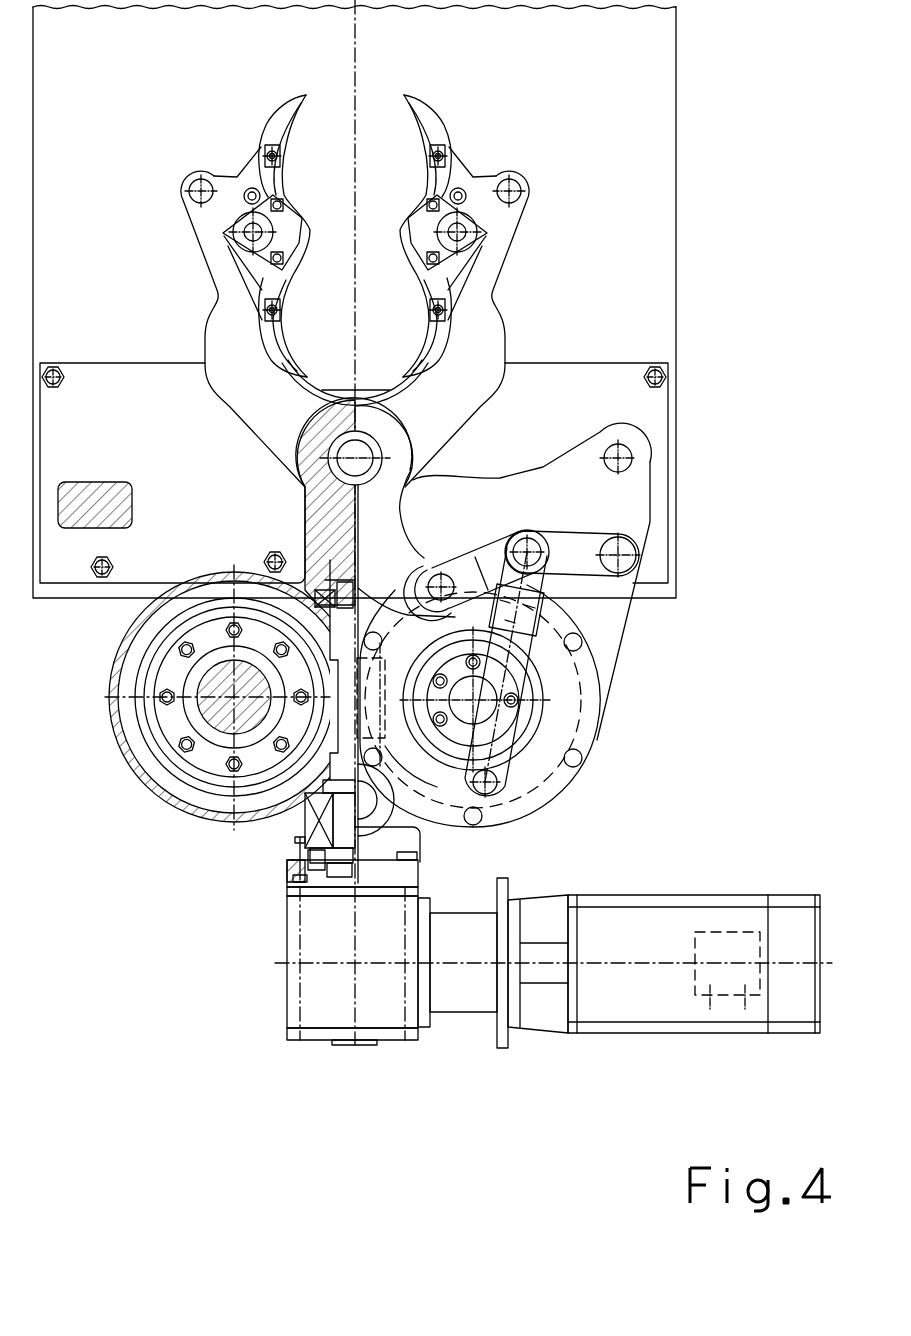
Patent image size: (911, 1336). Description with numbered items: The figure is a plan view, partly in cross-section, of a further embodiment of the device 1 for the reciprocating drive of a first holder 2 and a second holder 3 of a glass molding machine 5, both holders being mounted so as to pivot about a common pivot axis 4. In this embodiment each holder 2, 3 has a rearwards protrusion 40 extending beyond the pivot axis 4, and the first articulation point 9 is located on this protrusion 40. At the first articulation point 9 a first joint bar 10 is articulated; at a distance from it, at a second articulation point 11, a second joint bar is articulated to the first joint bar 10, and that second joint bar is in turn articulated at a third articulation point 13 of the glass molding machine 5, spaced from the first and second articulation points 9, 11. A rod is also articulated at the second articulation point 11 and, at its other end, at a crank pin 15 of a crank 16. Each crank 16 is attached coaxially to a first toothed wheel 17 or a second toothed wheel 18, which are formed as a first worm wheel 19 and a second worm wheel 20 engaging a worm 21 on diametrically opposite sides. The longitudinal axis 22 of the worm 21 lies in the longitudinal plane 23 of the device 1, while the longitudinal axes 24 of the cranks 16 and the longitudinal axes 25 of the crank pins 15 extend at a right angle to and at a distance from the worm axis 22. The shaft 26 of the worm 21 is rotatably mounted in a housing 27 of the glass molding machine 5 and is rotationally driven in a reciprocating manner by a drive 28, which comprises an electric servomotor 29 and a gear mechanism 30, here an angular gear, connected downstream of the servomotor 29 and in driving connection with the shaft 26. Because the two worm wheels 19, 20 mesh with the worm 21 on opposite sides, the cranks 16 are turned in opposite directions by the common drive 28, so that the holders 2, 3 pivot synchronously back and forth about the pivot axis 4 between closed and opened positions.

The device 1 is at (178, 952).
The first holder 2 is at (217, 288).
The second holder 3 is at (502, 310).
The pivot axis 4 is at (380, 440).
The glass molding machine 5 is at (676, 115).
The first articulation point 9 is at (449, 562).
The first joint bar 10 is at (487, 542).
The second articulation point 11 is at (527, 537).
The third articulation point 13 is at (645, 522).
The crank pin 15 is at (497, 787).
The crank 16 is at (460, 768).
The first toothed wheel 17 is at (170, 778).
The second toothed wheel 18 is at (582, 700).
The first worm wheel 19 is at (200, 793).
The second worm wheel 20 is at (600, 690).
The worm 21 is at (345, 718).
The longitudinal axis of the worm 22 is at (372, 610).
The longitudinal plane 23 is at (362, 41).
The longitudinal axis of the crank 24 is at (195, 668).
The longitudinal axis of the crank pin 25 is at (497, 790).
The shaft 26 is at (365, 608).
The housing 27 is at (305, 505).
The drive 28 is at (570, 1033).
The electric servomotor 29 is at (693, 1025).
The gear mechanism 30 is at (290, 993).
The rearwards protrusion 40 is at (413, 550).